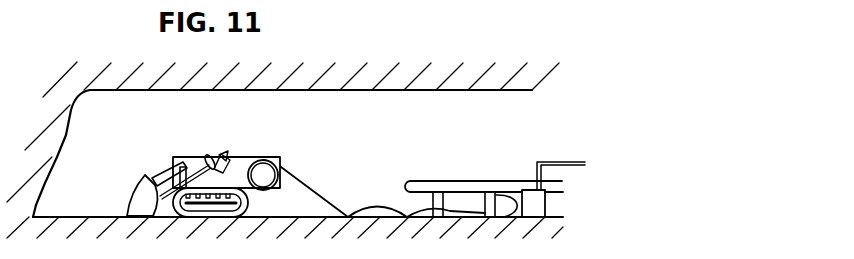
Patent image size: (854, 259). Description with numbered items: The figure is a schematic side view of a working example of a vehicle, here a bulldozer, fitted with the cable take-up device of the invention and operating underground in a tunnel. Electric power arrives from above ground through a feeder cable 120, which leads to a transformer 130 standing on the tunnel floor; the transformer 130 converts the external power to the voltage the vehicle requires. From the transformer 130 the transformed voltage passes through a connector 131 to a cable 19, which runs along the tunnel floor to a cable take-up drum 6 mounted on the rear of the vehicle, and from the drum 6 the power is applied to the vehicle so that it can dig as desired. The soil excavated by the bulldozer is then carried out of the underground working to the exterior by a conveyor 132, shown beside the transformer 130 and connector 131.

The cable take-up drum 6 is at (262, 165).
The cable 19 is at (313, 190).
The conveyor 132 is at (420, 181).
The connector 131 is at (519, 203).
The feeder cable 120 is at (545, 161).
The transformer 130 is at (540, 206).